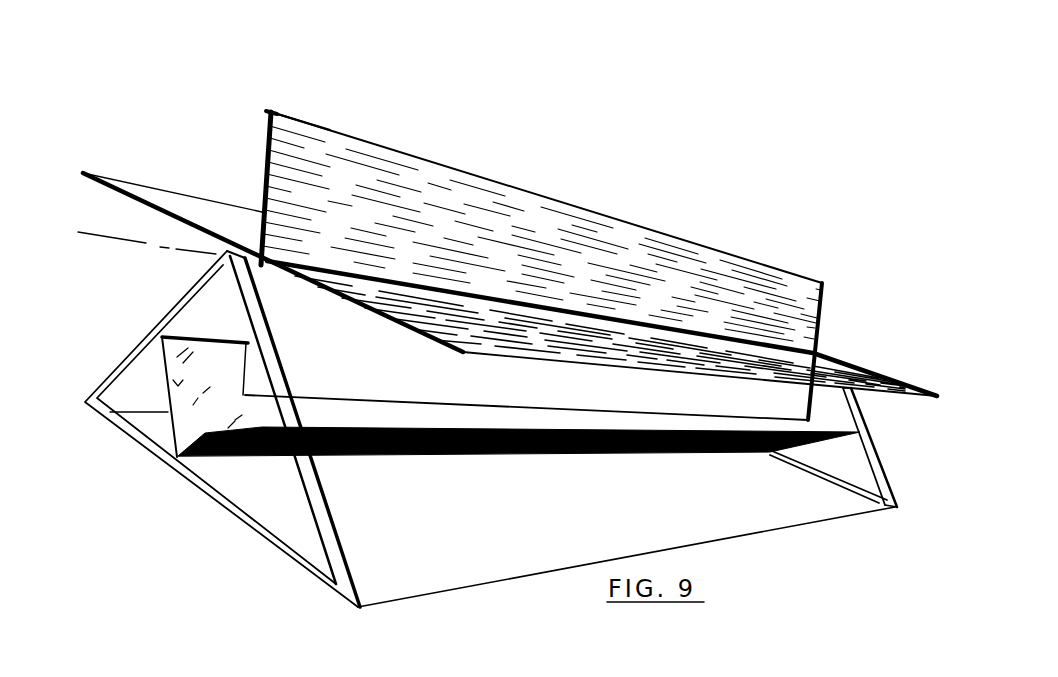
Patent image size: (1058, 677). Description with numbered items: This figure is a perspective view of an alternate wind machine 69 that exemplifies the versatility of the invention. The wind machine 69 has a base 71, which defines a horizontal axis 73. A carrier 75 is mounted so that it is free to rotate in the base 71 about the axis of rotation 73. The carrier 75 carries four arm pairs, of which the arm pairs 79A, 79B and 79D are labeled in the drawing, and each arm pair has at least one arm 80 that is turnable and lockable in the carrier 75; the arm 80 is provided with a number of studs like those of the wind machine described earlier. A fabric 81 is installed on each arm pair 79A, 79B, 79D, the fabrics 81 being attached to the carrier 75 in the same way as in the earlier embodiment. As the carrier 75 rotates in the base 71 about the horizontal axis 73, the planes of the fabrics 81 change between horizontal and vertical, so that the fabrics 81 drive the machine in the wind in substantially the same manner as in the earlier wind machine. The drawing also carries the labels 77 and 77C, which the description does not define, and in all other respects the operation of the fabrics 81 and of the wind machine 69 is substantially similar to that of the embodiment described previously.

The wind machine 69 is at (292, 578).
The base 71 is at (232, 518).
The horizontal axis 73 is at (134, 242).
The carrier 75 is at (260, 123).
The side edge of collector panel 77 is at (834, 298).
The end plate of collector 77C is at (236, 386).
The arm pair 79A is at (268, 104).
The arm pair 79B is at (873, 362).
The arm pair 79D is at (90, 186).
The arm 80 is at (264, 160).
The fabric 81 is at (478, 170).